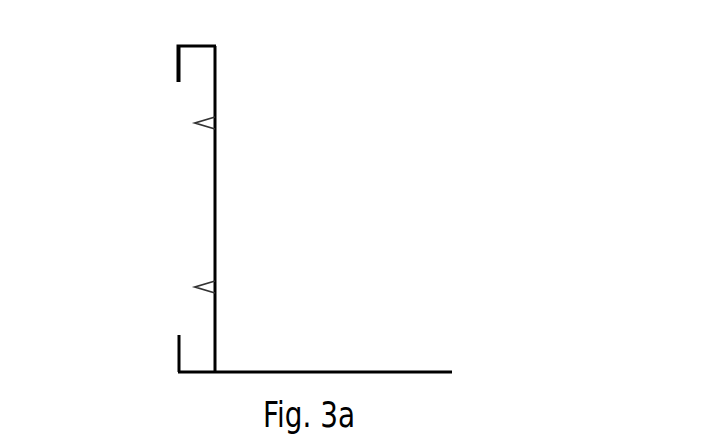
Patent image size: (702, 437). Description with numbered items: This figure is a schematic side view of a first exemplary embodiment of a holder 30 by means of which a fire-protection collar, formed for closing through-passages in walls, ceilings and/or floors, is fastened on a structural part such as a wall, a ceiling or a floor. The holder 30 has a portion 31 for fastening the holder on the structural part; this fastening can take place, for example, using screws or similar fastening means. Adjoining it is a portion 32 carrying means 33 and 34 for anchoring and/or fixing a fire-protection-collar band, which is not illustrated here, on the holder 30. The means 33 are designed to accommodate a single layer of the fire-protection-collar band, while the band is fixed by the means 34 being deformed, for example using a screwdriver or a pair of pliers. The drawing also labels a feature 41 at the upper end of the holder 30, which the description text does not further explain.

The holder 30 is at (517, 177).
The portion for fastening the holder 31 is at (330, 372).
The portion with means for anchoring and/or fixing 32 is at (215, 205).
The means for anchoring and/or fixing 33 is at (178, 72).
The means for anchoring and/or fixing 34 is at (213, 127).
The top hook 41 is at (198, 45).